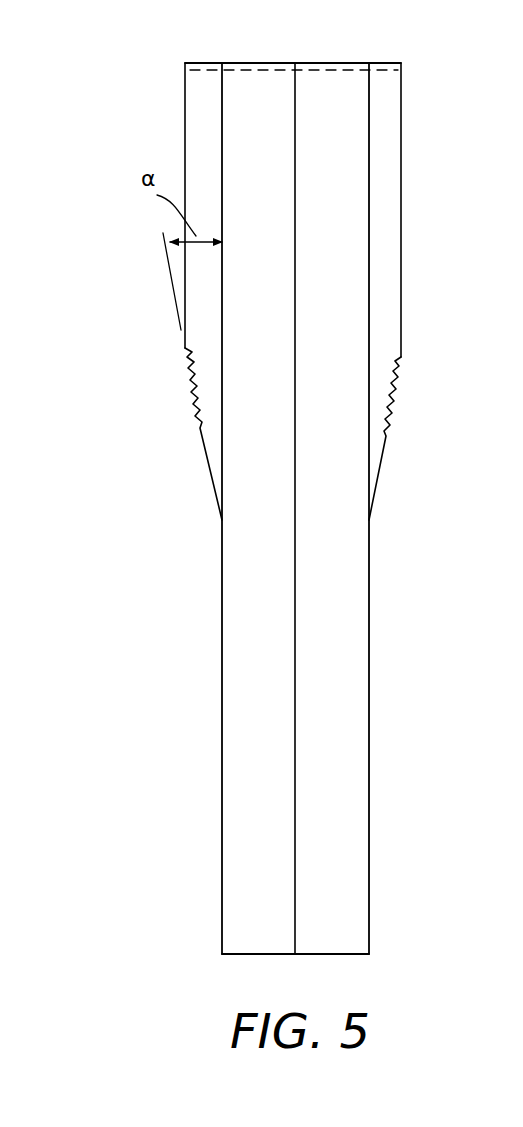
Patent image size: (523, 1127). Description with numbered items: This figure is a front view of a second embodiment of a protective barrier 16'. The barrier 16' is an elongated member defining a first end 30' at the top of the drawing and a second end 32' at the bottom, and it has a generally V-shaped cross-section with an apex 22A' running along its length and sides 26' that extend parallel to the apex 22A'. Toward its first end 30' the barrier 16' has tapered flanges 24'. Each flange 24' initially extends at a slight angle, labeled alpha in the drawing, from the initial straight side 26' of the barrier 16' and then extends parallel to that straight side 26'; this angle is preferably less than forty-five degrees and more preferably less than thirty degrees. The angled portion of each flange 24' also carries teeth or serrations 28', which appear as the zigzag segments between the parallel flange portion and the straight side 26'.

The protective barrier 16' is at (257, 501).
The apex 22A' is at (394, 508).
The tapered flanges 24' is at (284, 210).
The sides 26' is at (284, 508).
The teeth or serrations 28' is at (283, 434).
The first end 30' is at (293, 37).
The second end 32' is at (330, 976).